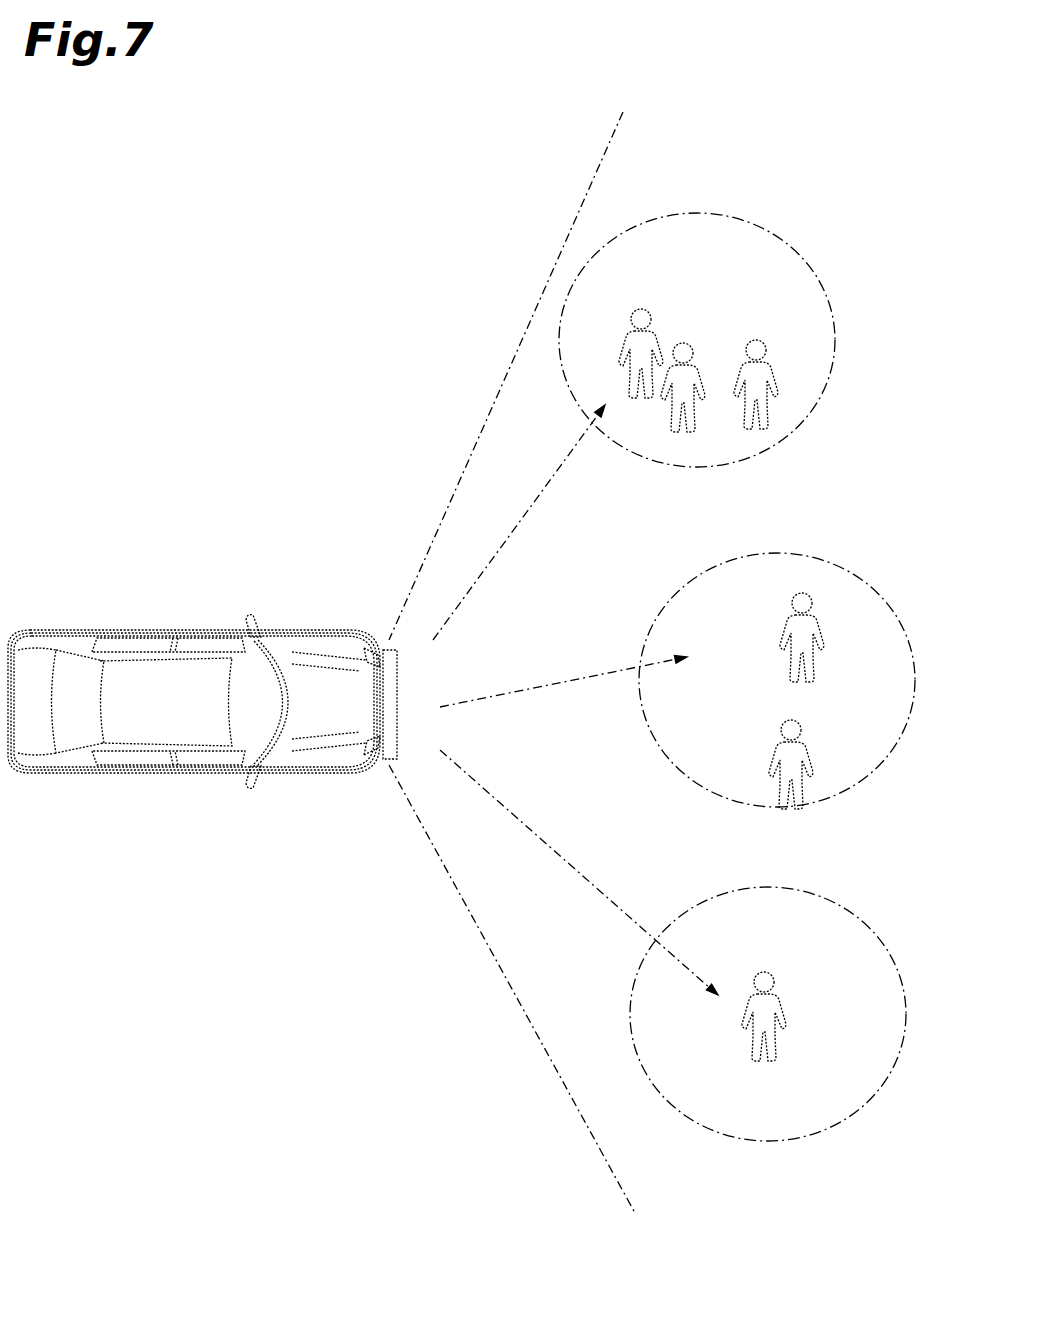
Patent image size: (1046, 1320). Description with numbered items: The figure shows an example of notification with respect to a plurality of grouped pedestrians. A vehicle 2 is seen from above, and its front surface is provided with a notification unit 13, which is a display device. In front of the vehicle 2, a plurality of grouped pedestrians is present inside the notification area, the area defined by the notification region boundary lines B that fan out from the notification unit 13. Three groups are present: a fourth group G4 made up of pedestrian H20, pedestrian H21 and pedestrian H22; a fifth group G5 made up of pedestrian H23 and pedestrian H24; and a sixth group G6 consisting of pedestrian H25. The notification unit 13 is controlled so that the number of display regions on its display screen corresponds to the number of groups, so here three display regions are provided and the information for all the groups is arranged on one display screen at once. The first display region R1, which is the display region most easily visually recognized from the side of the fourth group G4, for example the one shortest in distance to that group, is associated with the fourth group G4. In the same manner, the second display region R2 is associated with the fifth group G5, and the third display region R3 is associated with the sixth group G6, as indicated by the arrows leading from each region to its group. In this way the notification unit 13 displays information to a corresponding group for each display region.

The vehicle 2 is at (163, 630).
The notification unit 13 is at (388, 649).
The notification region boundary lines B is at (522, 333).
The first display region R1 is at (503, 544).
The second display region R2 is at (544, 690).
The third display region R3 is at (560, 865).
The fourth group G4 is at (752, 223).
The fifth group G5 is at (832, 563).
The sixth group G6 is at (838, 902).
The pedestrian H20 is at (642, 308).
The pedestrian H21 is at (683, 342).
The pedestrian H22 is at (757, 340).
The pedestrian H23 is at (803, 592).
The pedestrian H24 is at (794, 720).
The pedestrian H25 is at (768, 973).